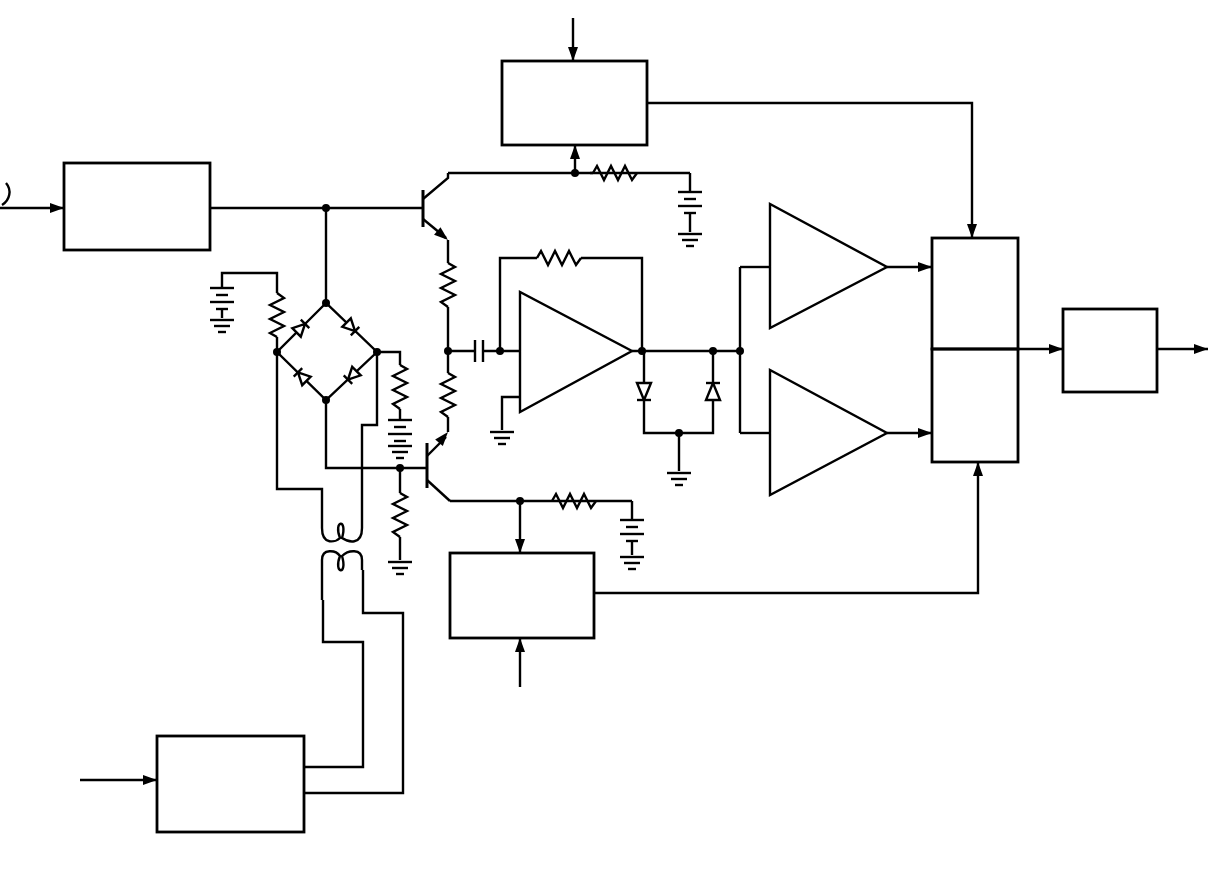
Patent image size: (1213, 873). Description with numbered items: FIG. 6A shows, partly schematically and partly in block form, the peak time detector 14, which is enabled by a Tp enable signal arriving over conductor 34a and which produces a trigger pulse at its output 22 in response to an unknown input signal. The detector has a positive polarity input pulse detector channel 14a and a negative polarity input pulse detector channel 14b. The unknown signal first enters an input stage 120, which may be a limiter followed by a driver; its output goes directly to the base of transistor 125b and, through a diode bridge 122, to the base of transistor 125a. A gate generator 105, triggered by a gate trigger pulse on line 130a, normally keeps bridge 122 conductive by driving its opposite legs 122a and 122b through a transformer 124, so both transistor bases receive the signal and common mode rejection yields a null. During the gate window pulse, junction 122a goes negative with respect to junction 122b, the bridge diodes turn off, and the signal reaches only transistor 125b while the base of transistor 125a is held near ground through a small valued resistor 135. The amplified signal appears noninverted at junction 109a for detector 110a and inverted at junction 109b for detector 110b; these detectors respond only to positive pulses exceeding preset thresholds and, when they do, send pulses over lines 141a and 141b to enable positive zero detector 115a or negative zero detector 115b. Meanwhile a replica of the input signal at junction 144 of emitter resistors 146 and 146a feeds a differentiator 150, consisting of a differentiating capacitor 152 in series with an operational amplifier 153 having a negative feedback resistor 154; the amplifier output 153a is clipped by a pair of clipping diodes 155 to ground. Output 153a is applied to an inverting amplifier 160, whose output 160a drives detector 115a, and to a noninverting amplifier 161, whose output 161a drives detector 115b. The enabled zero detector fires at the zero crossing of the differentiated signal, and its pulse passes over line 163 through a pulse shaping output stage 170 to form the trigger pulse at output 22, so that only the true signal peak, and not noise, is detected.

The peak time detector 14 is at (577, 791).
The positive polarity input pulse detector channel 14a is at (792, 627).
The negative polarity input pulse detector channel 14b is at (826, 134).
The output 22 is at (1175, 348).
The conductor 34a is at (576, 30).
The gate generator 105 is at (210, 736).
The junction 109a is at (524, 504).
The junction 109b is at (572, 176).
The detector 110a is at (562, 640).
The detector 110b is at (648, 82).
The positive zero detector 115a is at (1020, 416).
The negative zero detector 115b is at (1020, 262).
The input stage 120 is at (150, 251).
The diode bridge 122 is at (336, 363).
The bridge leg junction 122a is at (276, 354).
The bridge leg junction 122b is at (377, 351).
The transformer 124 is at (322, 528).
The transistor 125a is at (430, 461).
The transistor 125b is at (420, 192).
The line 130a is at (128, 770).
The small valued resistor 135 is at (405, 506).
The line 141a is at (897, 594).
The line 141b is at (973, 140).
The junction 144 is at (450, 372).
The emitter resistor 146 is at (447, 278).
The emitter resistor 146a is at (452, 416).
The differentiator 150 is at (615, 357).
The differentiating capacitor 152 is at (472, 351).
The operational amplifier 153 is at (600, 307).
The output of amplifier 153 153a is at (645, 351).
The negative feedback resistor 154 is at (556, 257).
The pair of clipping diodes 155 is at (706, 385).
The inverting amplifier 160 is at (812, 396).
The output of amplifier 160 160a is at (900, 431).
The noninverting amplifier 161 is at (835, 236).
The output of amplifier 161 161a is at (898, 264).
The zero detector output line 163 is at (1034, 347).
The pulse shaping output stage 170 is at (1143, 288).